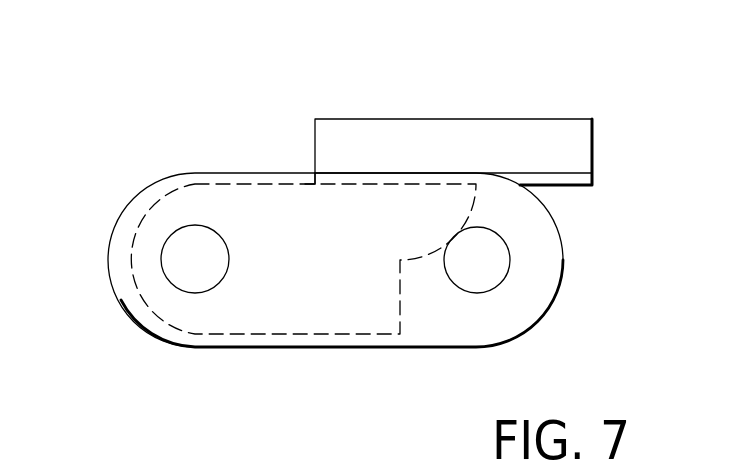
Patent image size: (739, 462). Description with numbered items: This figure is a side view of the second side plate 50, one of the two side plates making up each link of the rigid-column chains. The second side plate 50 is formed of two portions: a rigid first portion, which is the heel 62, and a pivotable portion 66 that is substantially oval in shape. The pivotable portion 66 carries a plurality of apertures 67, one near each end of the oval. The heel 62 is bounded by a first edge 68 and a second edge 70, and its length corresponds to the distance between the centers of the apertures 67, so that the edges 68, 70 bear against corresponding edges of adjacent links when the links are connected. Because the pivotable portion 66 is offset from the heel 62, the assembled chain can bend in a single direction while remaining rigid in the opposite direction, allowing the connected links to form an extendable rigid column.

The second side plate 50 is at (344, 271).
The heel 62 is at (443, 108).
The pivotable portion 66 is at (537, 323).
The apertures 67 is at (225, 282).
The first edge 68 is at (315, 146).
The second edge 70 is at (592, 158).